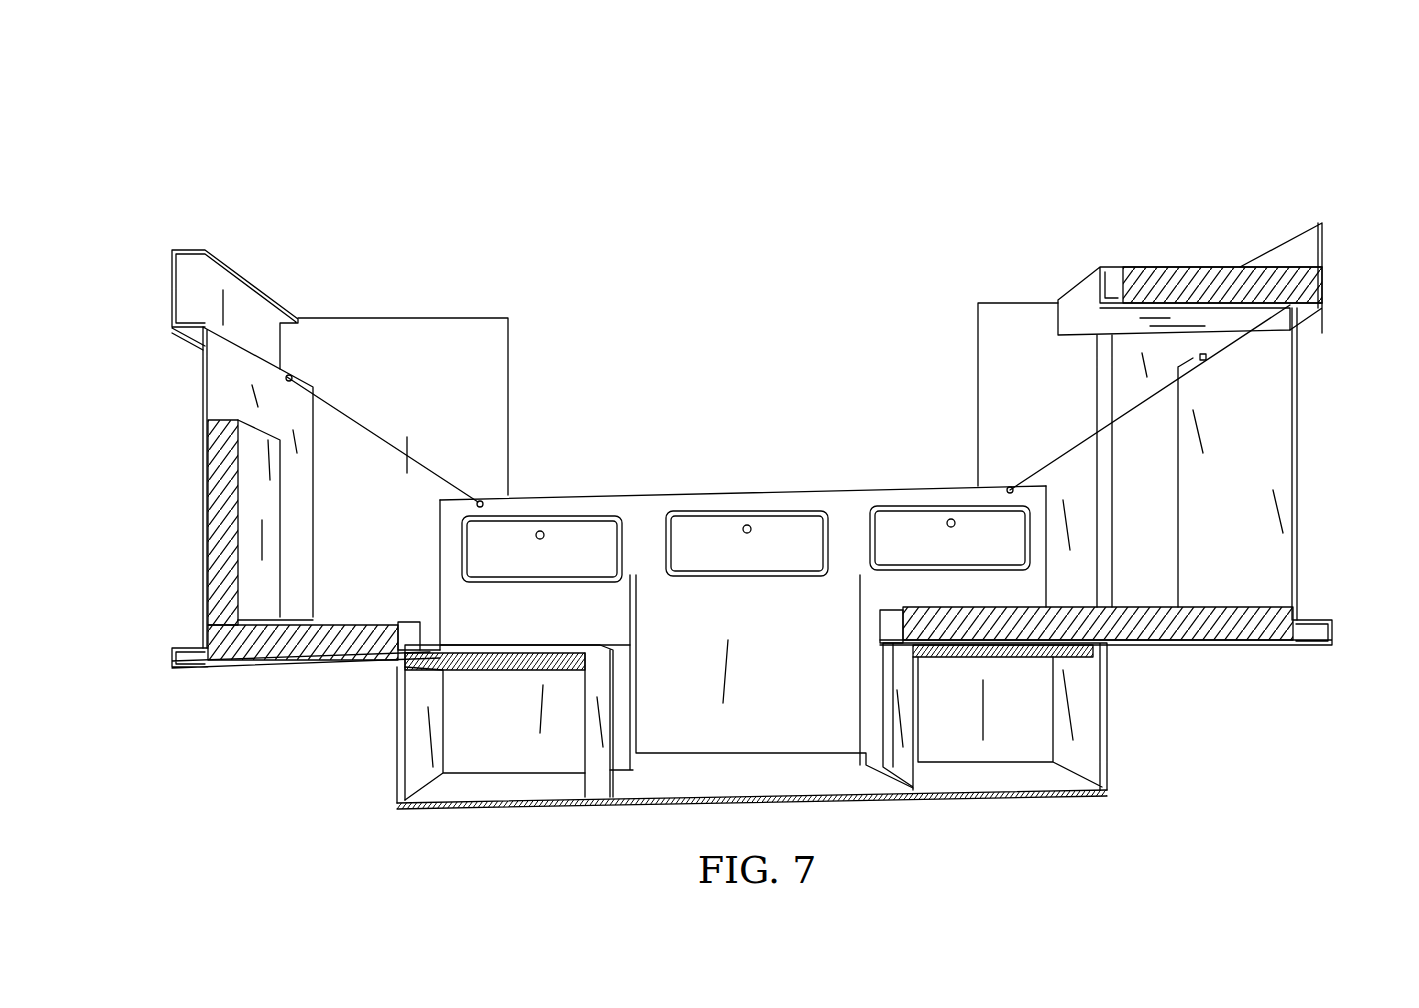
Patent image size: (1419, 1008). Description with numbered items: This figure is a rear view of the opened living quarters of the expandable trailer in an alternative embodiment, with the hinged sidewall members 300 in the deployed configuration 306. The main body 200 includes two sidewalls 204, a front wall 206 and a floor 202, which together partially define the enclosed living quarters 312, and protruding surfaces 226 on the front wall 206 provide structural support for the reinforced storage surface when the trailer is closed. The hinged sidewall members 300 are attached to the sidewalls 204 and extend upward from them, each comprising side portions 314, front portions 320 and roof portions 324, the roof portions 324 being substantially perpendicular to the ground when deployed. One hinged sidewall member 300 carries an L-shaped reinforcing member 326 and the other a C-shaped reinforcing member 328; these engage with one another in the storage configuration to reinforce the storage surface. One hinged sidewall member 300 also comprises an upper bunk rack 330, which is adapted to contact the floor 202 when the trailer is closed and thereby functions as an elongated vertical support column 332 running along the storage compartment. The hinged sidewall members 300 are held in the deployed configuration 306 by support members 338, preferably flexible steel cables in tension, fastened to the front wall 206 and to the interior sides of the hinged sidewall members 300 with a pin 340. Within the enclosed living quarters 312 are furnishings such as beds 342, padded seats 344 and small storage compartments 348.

The main body 200 is at (607, 235).
The floor 202 is at (835, 768).
The sidewalls 204 is at (412, 727).
The front wall 206 is at (823, 607).
The protruding surfaces 226 is at (617, 492).
The hinged sidewall members 300 is at (197, 392).
The deployed configuration 306 is at (808, 130).
The enclosed living quarters 312 is at (607, 395).
The side portions 314 is at (253, 668).
The front portions 320 is at (383, 340).
The roof portions 324 is at (223, 372).
The L-shaped reinforcing member 326 is at (1305, 248).
The C-shaped reinforcing member 328 is at (182, 292).
The upper bunk rack 330 is at (1170, 247).
The vertical support column 332 is at (1225, 320).
The support members 338 is at (378, 437).
The pin 340 is at (292, 375).
The beds 342 is at (1222, 262).
The padded seats 344 is at (215, 568).
The small storage compartments 348 is at (713, 537).